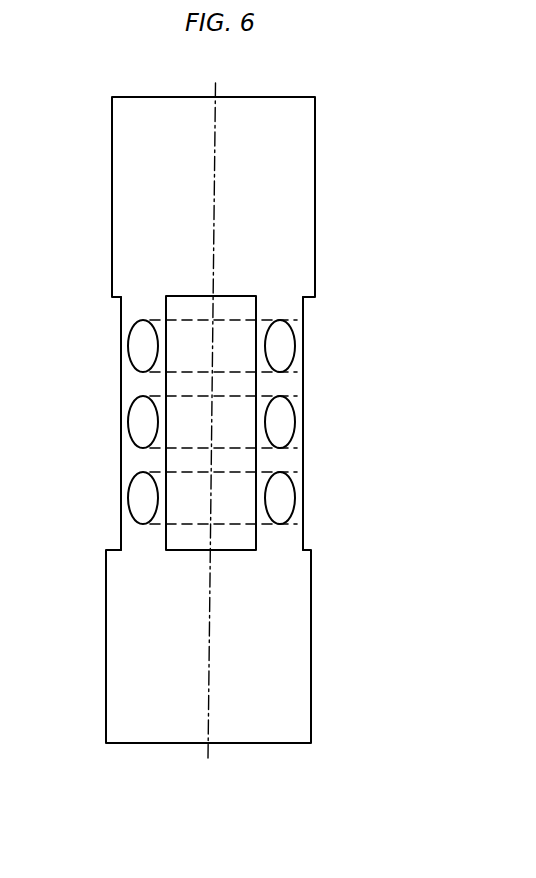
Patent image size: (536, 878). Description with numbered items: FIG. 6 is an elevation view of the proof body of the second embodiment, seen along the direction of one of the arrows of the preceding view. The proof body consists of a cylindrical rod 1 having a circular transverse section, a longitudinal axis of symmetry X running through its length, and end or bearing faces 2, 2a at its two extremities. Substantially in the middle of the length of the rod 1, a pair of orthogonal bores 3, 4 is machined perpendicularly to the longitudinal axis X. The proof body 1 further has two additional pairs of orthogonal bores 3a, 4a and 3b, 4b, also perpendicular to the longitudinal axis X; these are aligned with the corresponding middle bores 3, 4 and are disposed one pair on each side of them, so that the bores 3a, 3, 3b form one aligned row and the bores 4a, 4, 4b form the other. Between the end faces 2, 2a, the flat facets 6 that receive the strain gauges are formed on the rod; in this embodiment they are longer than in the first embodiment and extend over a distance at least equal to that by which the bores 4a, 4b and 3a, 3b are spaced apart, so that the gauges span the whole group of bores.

The rod 1 is at (275, 634).
The end or bearing face 2 is at (238, 97).
The end or bearing face 2a is at (179, 743).
The bore 3 is at (283, 427).
The bore 3a is at (283, 352).
The bore 3b is at (283, 503).
The bore 4 is at (140, 422).
The bore 4a is at (140, 347).
The bore 4b is at (140, 498).
The flat facet 6 is at (303, 313).
The longitudinal axis of symmetry X is at (215, 170).